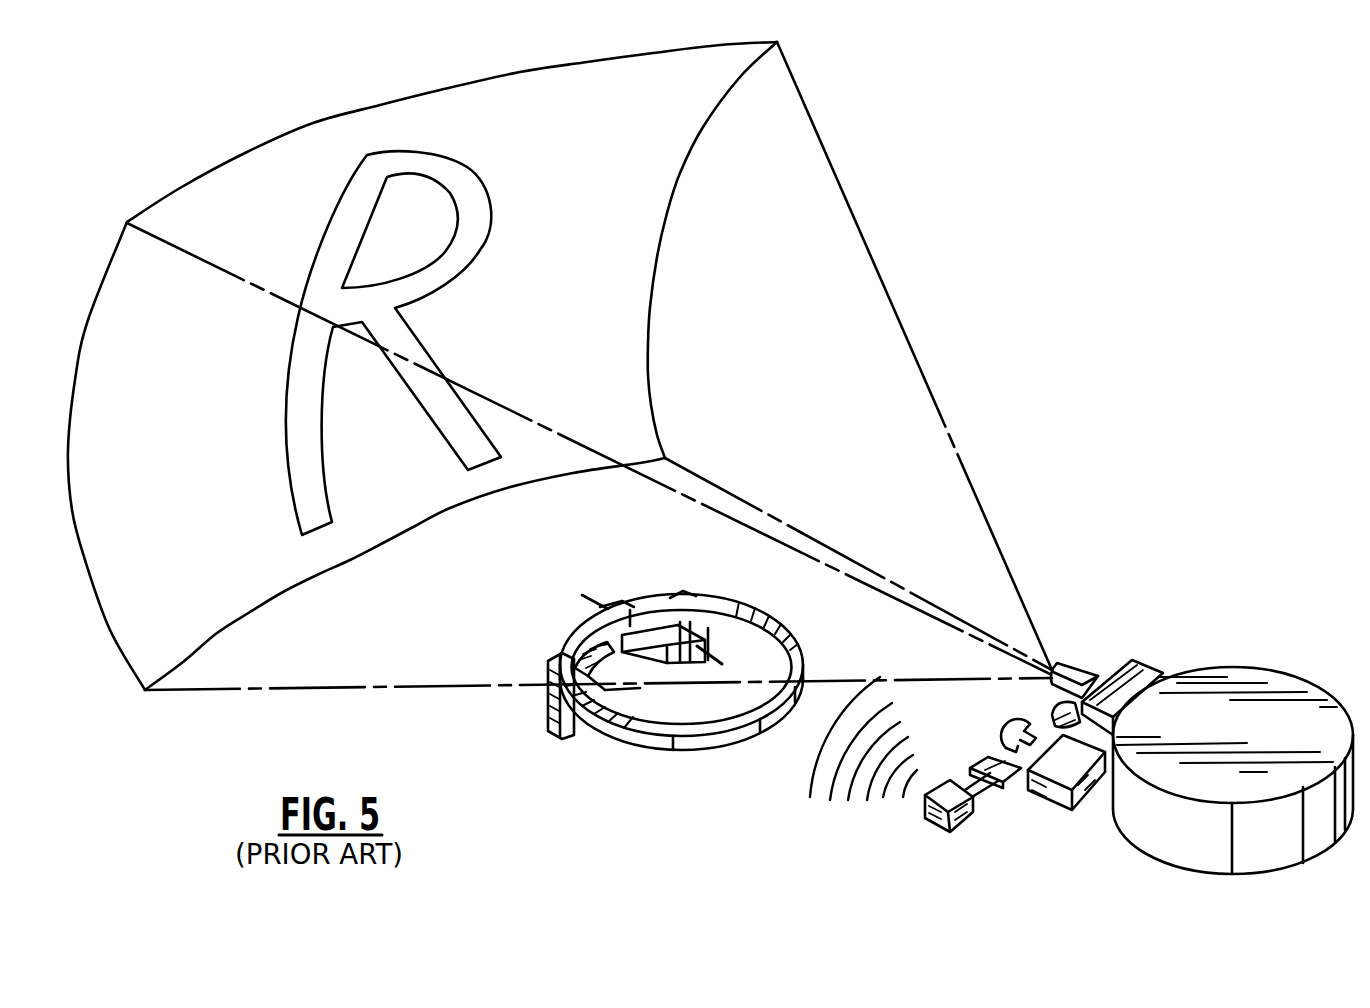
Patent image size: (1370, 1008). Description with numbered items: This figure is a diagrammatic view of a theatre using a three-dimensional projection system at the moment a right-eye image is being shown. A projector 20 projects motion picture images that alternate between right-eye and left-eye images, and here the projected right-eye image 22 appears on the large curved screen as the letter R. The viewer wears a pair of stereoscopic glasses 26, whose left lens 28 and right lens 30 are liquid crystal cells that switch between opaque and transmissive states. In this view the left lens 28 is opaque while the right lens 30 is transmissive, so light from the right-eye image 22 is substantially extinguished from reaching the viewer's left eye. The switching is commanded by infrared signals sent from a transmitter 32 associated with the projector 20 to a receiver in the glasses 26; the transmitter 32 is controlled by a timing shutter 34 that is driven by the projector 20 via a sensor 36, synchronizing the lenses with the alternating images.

The projector 20 is at (1232, 664).
The right-eye image 22 is at (538, 88).
The 3-D glasses 26 is at (646, 766).
The left lens 28 is at (608, 674).
The right lens 30 is at (678, 665).
The transmitter 32 is at (970, 806).
The timing shutter 34 is at (1002, 757).
The sensor 36 is at (975, 757).